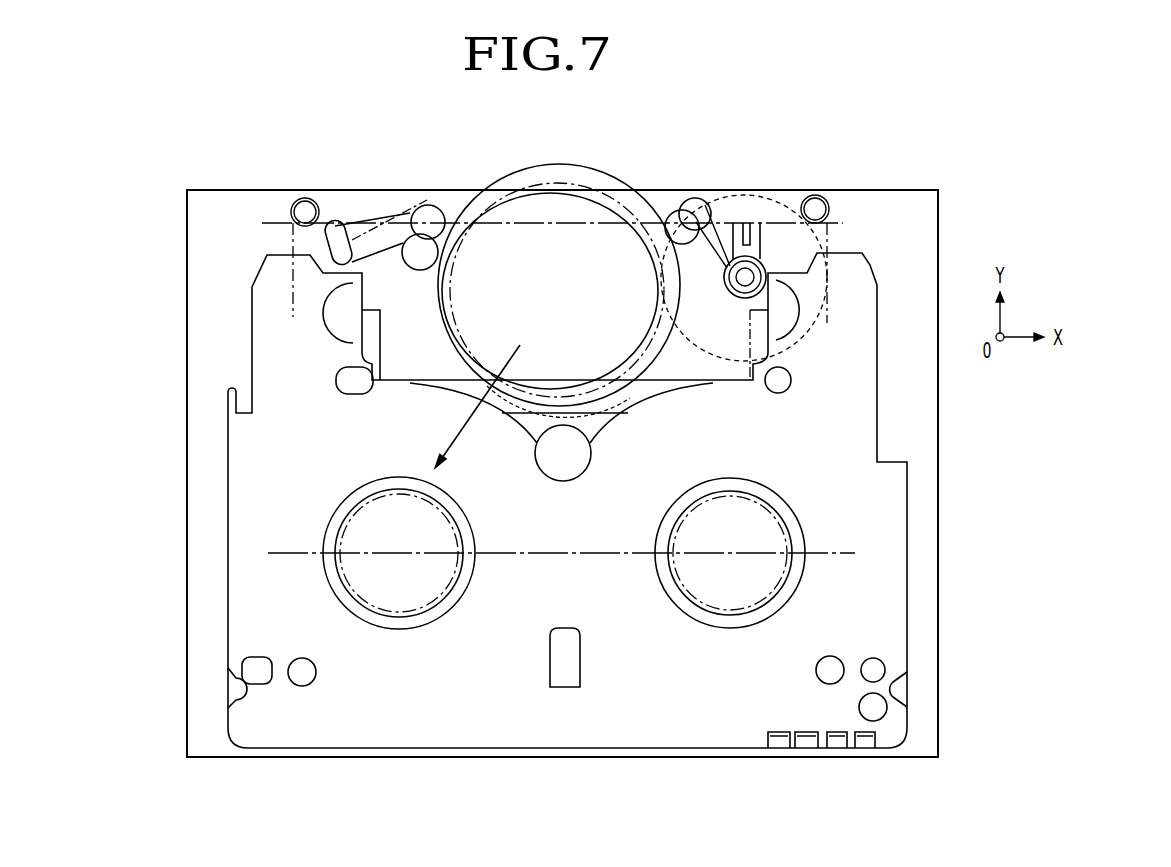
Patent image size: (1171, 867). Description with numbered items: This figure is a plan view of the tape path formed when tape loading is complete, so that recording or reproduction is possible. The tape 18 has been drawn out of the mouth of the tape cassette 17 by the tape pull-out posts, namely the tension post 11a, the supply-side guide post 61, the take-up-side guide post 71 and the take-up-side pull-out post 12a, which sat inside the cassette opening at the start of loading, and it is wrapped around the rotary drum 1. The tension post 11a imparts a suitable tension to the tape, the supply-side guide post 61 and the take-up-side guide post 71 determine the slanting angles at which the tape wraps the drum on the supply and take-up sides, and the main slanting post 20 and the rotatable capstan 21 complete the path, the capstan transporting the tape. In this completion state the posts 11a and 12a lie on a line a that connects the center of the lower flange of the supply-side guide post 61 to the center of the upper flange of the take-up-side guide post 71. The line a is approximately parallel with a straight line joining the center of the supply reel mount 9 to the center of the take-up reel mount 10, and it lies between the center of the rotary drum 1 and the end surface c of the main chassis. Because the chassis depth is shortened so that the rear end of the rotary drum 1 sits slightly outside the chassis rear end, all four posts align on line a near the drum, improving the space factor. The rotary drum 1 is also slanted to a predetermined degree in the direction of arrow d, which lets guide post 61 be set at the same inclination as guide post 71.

The rotary drum 1 is at (607, 242).
The supply reel mount 9 is at (430, 597).
The take-up reel mount 10 is at (777, 582).
The tension post 11a is at (300, 203).
The take-up-side pull-out post 12a is at (818, 200).
The tape cassette 17 is at (723, 733).
The tape 18 is at (393, 232).
The main slanting post 20 is at (338, 232).
The capstan 21 is at (755, 237).
The supply-side guide post 61 is at (440, 212).
The take-up-side guide post 71 is at (698, 212).
The line a is at (860, 222).
The end surface of the main chassis c is at (888, 190).
The arrow d is at (477, 406).